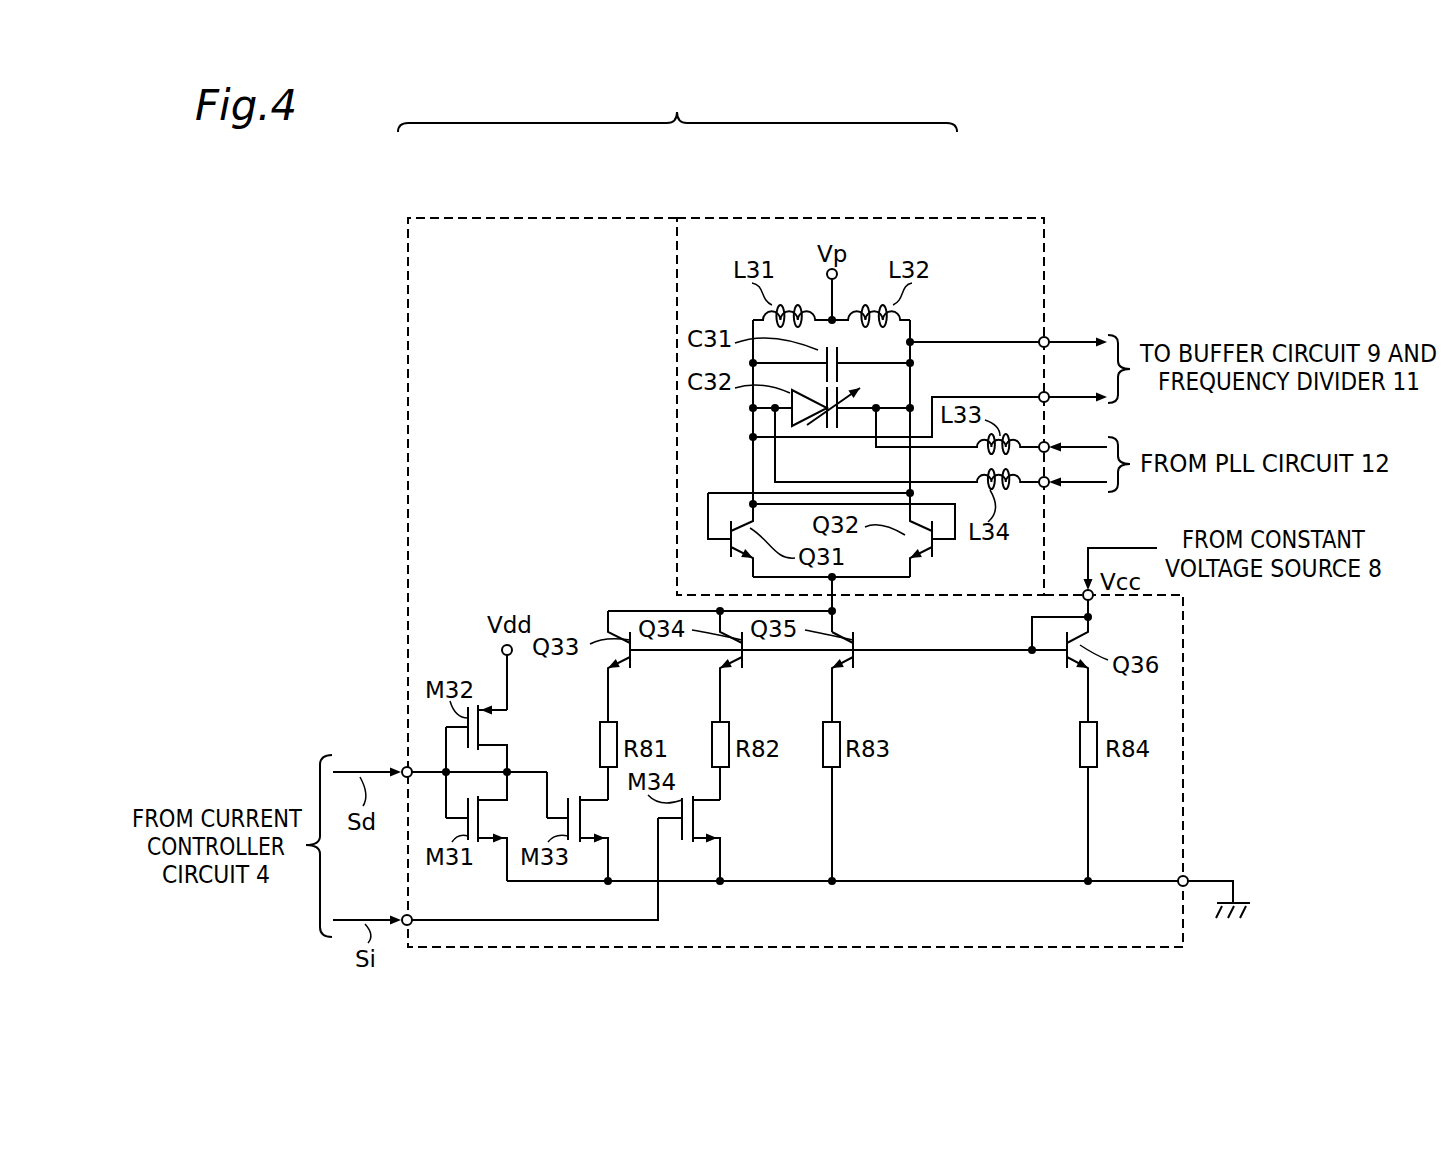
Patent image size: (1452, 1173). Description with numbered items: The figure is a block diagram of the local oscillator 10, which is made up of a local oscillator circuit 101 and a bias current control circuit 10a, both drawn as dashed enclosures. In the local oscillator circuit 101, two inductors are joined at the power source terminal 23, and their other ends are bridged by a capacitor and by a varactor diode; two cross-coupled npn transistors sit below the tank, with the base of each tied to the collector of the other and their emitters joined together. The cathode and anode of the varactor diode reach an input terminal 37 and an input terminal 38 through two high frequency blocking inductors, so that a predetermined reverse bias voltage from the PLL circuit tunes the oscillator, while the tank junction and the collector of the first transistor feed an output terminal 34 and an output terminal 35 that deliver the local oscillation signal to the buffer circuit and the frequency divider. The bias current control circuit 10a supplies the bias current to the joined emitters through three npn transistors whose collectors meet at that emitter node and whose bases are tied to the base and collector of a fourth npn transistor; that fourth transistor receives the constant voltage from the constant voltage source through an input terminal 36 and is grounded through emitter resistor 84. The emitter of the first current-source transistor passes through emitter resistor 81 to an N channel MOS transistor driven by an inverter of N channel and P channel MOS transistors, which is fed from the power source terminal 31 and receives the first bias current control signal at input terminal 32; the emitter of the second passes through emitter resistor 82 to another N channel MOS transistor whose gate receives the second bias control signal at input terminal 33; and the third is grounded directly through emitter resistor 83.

The local oscillator 10 is at (677, 107).
The bias current control circuit 10a is at (440, 215).
The local oscillator circuit 101 is at (710, 218).
The power source terminal 23 is at (828, 270).
The power source terminal Vdd 31 is at (502, 650).
The input terminal 32 is at (400, 765).
The input terminal 33 is at (400, 913).
The output terminal 34 is at (1050, 338).
The output terminal 35 is at (1050, 393).
The input terminal 36 is at (1082, 590).
The input terminal 37 is at (1050, 443).
The input terminal 38 is at (1055, 488).
The emitter resistor 81 is at (600, 745).
The emitter resistor 82 is at (712, 745).
The emitter resistor 83 is at (823, 745).
The emitter resistor 84 is at (1080, 745).